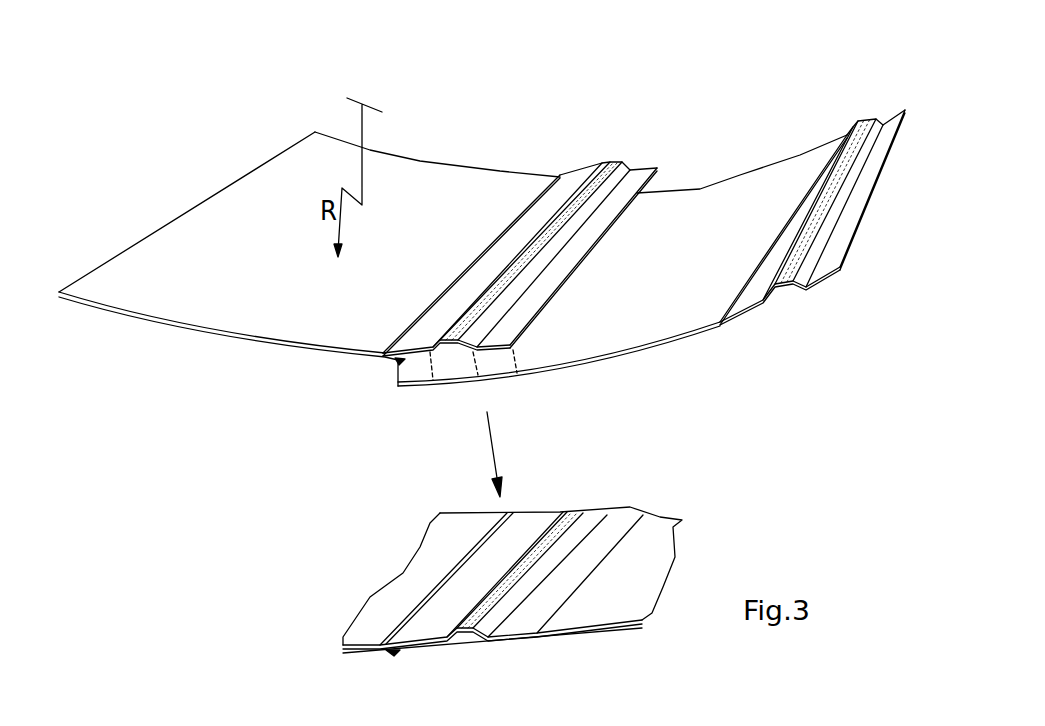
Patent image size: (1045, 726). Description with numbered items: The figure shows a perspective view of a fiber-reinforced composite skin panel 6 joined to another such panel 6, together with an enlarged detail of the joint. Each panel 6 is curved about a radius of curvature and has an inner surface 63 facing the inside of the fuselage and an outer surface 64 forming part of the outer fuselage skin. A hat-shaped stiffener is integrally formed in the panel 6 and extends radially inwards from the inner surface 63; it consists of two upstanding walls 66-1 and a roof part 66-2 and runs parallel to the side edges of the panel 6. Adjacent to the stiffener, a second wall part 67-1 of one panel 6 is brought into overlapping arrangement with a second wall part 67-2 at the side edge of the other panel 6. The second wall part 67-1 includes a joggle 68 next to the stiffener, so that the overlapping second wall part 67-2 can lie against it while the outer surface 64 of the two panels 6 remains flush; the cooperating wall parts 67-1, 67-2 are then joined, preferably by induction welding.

The fiber-reinforced composite skin panel 6 is at (205, 141).
The inner surface 63 is at (297, 294).
The outer surface 64 is at (692, 338).
The upstanding walls 66-1 is at (440, 345).
The roof part 66-2 is at (605, 165).
The second wall part 67-1 is at (563, 193).
The second wall part 67-2 is at (427, 370).
The joggle 68 is at (396, 371).